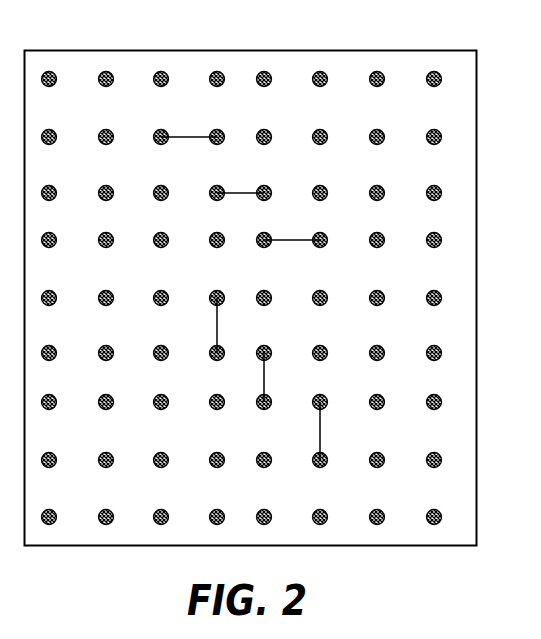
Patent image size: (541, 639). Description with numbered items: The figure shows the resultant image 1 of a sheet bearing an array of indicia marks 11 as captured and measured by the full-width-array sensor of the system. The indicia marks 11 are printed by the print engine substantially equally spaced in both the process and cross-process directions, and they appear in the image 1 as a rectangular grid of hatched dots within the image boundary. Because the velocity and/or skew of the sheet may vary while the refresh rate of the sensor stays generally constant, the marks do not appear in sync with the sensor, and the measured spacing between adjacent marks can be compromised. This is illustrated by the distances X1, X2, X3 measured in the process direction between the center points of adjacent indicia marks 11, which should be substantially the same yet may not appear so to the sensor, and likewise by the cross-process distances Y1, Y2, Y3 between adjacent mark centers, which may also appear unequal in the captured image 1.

The resultant image 1 is at (477, 119).
The indicia marks 11 is at (110, 71).
The process-direction distance X1 is at (189, 123).
The process-direction distance X2 is at (240, 180).
The process-direction distance X3 is at (292, 227).
The cross-process-direction distance Y1 is at (202, 325).
The cross-process-direction distance Y2 is at (247, 377).
The cross-process-direction distance Y3 is at (306, 431).